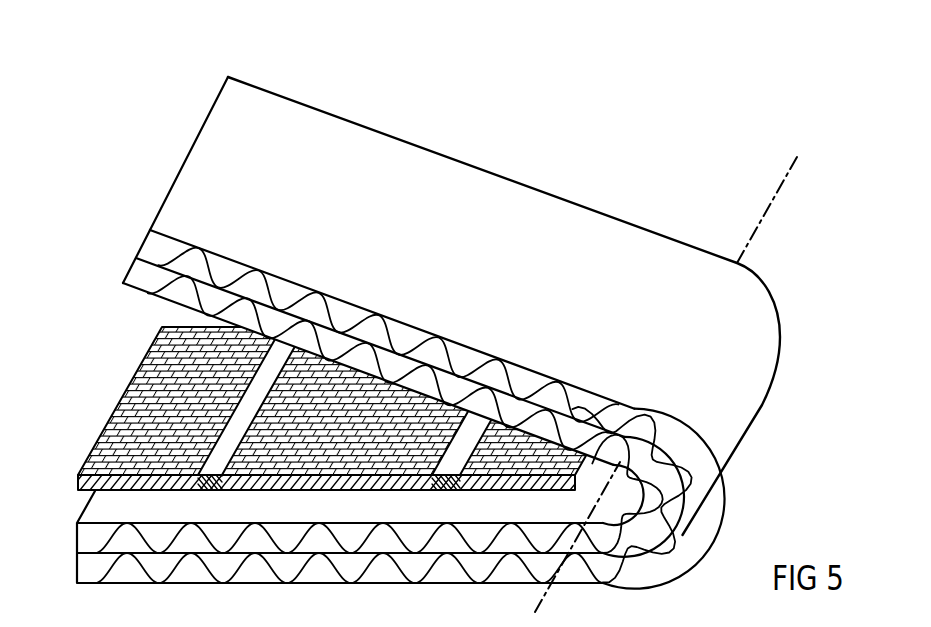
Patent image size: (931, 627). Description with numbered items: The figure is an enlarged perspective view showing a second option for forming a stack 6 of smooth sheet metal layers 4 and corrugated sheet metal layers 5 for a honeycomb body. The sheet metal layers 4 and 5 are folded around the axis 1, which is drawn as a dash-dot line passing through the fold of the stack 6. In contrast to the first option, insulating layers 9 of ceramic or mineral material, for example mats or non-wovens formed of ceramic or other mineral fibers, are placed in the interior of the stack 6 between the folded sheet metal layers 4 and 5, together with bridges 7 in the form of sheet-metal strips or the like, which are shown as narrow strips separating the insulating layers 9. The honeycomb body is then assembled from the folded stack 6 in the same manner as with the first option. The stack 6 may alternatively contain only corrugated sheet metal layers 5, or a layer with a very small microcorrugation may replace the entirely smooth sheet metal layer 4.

The axis 1 is at (540, 606).
The smooth sheet metal layer 4 is at (135, 294).
The corrugated sheet metal layer 5 is at (316, 292).
The stack 6 is at (672, 553).
The bridge 7 is at (208, 491).
The insulating layer 9 is at (78, 490).